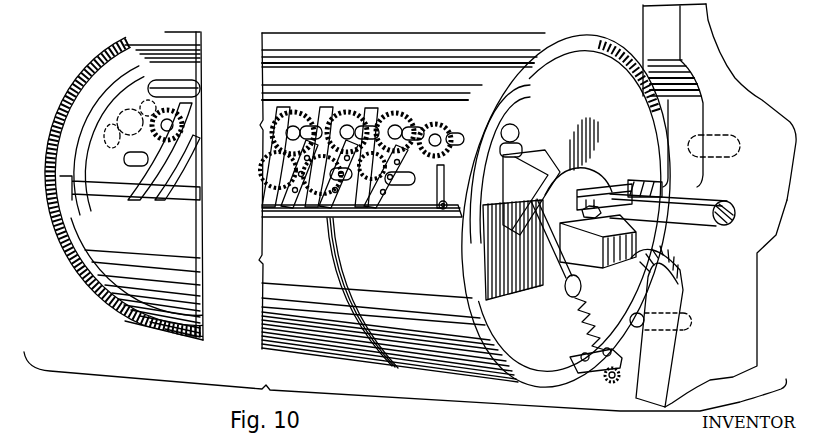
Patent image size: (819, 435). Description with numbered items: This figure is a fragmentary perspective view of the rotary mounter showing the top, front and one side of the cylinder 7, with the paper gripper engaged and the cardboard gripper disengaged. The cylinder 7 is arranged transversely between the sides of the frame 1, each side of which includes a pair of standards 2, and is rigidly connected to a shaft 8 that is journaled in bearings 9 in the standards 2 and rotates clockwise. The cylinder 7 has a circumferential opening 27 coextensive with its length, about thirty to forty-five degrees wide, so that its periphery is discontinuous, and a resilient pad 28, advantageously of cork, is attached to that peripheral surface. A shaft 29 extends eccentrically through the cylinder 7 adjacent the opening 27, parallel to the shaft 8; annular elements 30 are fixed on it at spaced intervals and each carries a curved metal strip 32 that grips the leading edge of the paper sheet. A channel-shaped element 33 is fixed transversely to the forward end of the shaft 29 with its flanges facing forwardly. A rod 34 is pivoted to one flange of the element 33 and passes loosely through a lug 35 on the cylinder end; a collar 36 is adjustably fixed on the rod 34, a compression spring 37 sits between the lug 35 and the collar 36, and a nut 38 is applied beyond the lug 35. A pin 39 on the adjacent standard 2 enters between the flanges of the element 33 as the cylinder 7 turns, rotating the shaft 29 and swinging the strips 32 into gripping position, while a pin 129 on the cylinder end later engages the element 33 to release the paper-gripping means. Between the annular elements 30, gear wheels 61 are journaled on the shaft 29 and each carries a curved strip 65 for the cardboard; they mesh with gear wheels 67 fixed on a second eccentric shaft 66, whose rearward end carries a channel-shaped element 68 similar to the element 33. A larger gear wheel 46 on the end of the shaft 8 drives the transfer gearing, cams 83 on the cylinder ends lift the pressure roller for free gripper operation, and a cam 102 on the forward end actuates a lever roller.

The frame 1 is at (733, 50).
The standard 2 is at (758, 286).
The cylinder 7 is at (545, 36).
The shaft 8 is at (712, 202).
The bearing 9 is at (630, 185).
The circumferential opening 27 is at (322, 56).
The resilient pad 28 is at (312, 345).
The shaft 29 is at (133, 162).
The annular element 30 is at (352, 214).
The metal strip 32 is at (266, 214).
The channel-shaped element 33 is at (578, 187).
The rod 34 is at (546, 278).
The lug 35 is at (590, 370).
The collar 36 is at (582, 288).
The compression spring 37 is at (598, 322).
The nut 38 is at (612, 384).
The pin 39 is at (645, 312).
The gear wheel 46 is at (112, 52).
The gear wheel 61 is at (150, 200).
The metal strip 65 is at (320, 95).
The shaft 66 is at (150, 118).
The gear wheel 67 is at (346, 105).
The channel-shaped element 68 is at (96, 51).
The cam 83 is at (78, 148).
The cam 102 is at (490, 235).
The pin 129 is at (735, 137).